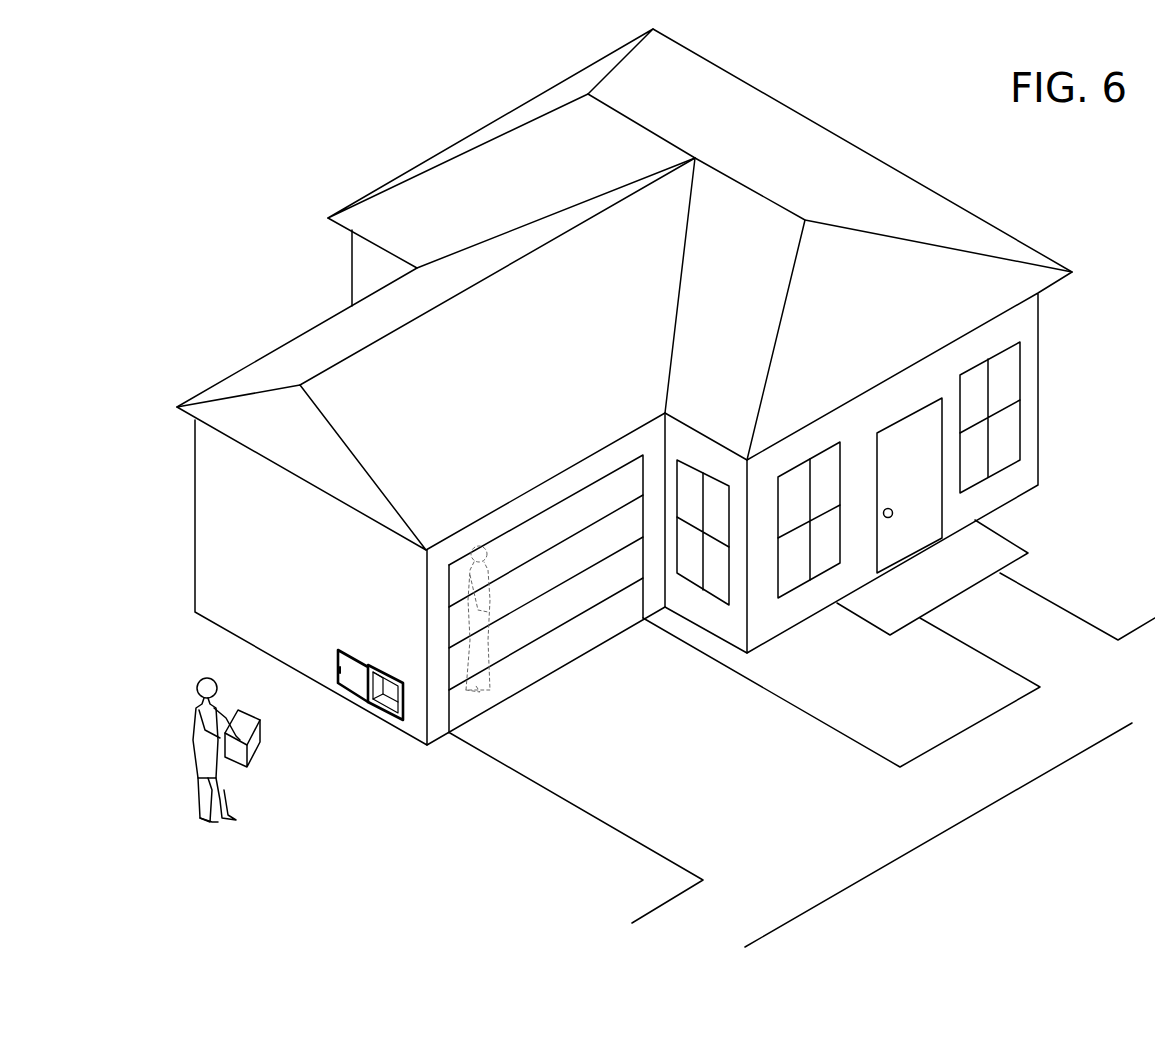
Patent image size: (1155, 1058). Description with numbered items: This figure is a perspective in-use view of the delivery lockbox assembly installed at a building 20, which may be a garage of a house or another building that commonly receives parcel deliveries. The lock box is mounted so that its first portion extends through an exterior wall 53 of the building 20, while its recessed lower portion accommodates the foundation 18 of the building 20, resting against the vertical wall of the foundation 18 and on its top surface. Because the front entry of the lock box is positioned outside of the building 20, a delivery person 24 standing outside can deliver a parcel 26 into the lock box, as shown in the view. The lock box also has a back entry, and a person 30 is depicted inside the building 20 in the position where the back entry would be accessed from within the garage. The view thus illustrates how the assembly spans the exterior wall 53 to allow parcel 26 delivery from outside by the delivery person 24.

The foundation 18 is at (408, 737).
The building 20 is at (593, 426).
The delivery person 24 is at (216, 750).
The parcel 26 is at (260, 732).
The user 30 is at (485, 592).
The exterior wall 53 is at (220, 540).